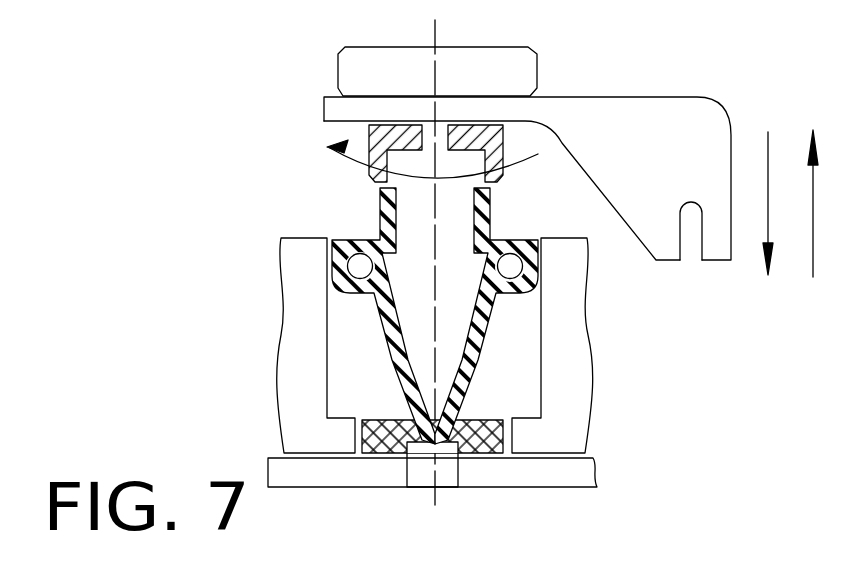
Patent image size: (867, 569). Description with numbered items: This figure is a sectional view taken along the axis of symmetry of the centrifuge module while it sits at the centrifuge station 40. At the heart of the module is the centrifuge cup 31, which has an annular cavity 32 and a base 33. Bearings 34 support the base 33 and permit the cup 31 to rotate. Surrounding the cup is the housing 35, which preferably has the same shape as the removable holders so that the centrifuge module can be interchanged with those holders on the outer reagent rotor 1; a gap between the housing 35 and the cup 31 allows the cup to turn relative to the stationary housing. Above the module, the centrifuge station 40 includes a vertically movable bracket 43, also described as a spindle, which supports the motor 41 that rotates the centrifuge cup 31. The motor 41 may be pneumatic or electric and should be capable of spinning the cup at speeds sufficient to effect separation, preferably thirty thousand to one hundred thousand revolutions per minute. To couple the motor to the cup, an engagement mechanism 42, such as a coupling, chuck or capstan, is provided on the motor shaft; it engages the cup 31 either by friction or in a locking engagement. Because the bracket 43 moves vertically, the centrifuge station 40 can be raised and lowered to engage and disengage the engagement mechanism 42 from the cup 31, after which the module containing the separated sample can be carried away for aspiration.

The outer reagent rotor 1 is at (578, 484).
The centrifuge cup 31 is at (380, 225).
The annular cavity 32 is at (510, 262).
The base 33 is at (492, 457).
The bearings 34 is at (400, 457).
The housing 35 is at (293, 332).
The centrifuge station 40 is at (708, 70).
The motor 41 is at (497, 57).
The engagement mechanism 42 is at (396, 110).
The bracket 43 is at (663, 237).